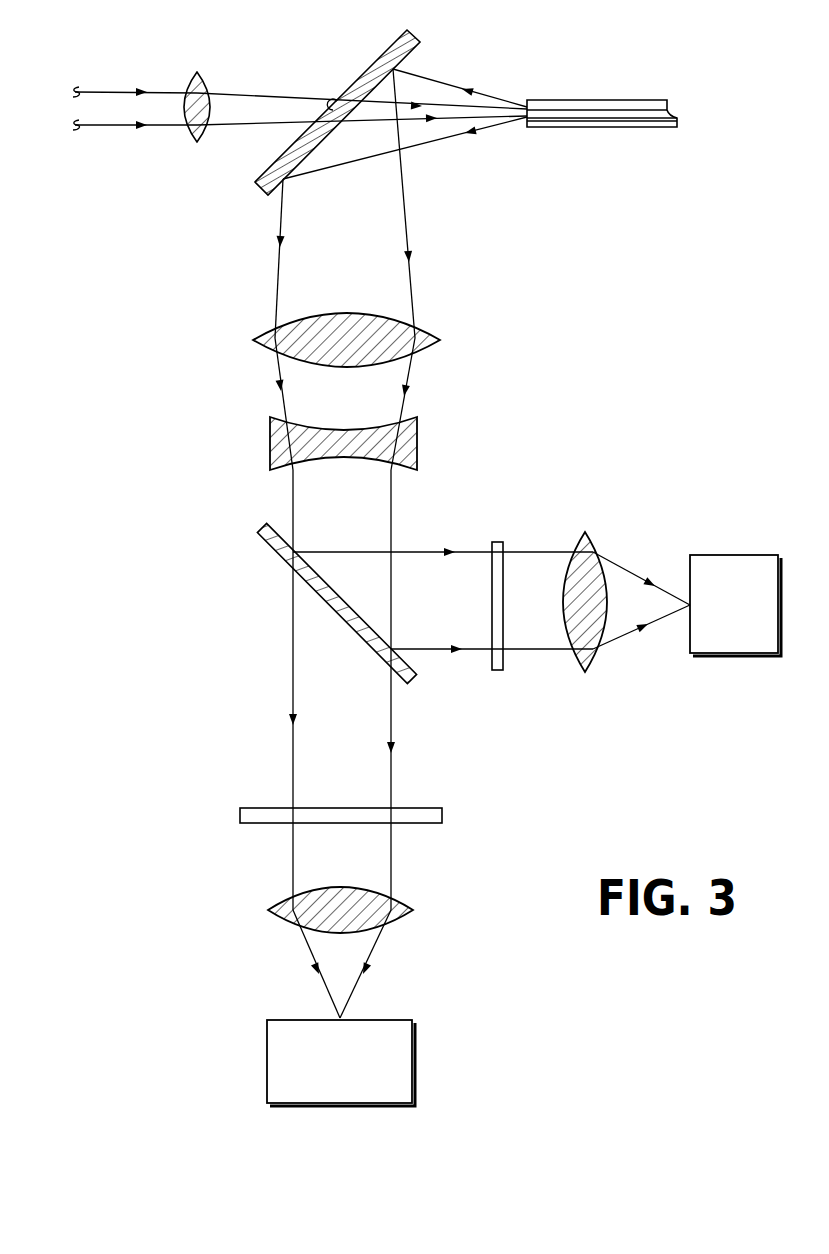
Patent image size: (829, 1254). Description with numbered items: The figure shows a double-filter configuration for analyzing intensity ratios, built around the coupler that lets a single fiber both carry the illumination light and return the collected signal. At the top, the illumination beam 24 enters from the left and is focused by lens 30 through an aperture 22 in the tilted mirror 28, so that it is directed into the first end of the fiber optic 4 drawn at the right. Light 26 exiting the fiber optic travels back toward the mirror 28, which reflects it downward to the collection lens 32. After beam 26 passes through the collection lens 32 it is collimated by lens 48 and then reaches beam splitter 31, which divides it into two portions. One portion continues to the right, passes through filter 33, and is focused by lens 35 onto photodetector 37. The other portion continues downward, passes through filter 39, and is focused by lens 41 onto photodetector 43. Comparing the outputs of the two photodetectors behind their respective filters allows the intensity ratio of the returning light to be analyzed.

The fiber optic 4 is at (571, 100).
The aperture 22 is at (337, 101).
The illumination beam 24 is at (113, 126).
The light exiting the fiber optic 26 is at (498, 98).
The mirror 28 is at (417, 34).
The lens 30 is at (196, 142).
The beam splitter 31 is at (278, 555).
The collection lens 32 is at (425, 327).
The filter 33 is at (496, 542).
The lens 35 is at (588, 541).
The photodetector 37 is at (749, 617).
The filter 39 is at (256, 808).
The lens 41 is at (276, 904).
The photodetector 43 is at (354, 1080).
The lens 48 is at (417, 447).